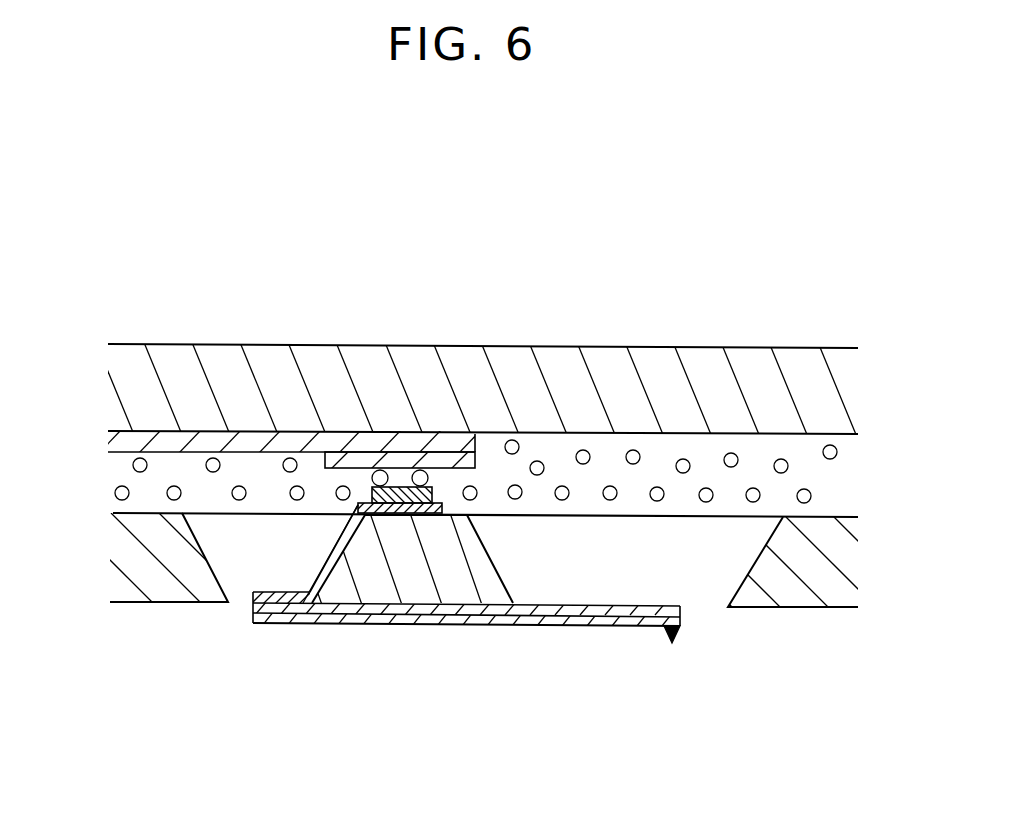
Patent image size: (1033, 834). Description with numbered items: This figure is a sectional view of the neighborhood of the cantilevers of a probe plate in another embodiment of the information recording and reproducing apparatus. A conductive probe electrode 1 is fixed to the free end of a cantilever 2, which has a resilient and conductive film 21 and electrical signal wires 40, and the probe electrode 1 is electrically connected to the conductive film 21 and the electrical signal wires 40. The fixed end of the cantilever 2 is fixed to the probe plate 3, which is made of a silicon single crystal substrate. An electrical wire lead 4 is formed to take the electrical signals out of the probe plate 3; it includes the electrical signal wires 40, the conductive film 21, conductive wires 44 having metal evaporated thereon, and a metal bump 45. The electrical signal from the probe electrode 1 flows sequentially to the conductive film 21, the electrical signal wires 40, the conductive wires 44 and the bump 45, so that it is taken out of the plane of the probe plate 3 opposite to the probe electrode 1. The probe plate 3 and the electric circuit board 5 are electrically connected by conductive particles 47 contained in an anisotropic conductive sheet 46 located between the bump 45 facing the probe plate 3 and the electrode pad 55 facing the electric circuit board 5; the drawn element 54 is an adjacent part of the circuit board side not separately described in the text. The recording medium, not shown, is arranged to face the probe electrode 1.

The conductive probe electrode 1 is at (677, 640).
The cantilever 2 is at (448, 659).
The probe plate 3 is at (495, 590).
The electrical wire lead 4 is at (247, 610).
The electric circuit board 5 is at (652, 363).
The conductive film 21 is at (484, 610).
The electrical signal wires 40 is at (457, 627).
The conductive wires 44 is at (251, 598).
The metal bump 45 is at (386, 497).
The anisotropic conductive sheet 46 is at (112, 467).
The conductive particles 47 is at (143, 461).
The electrode 54 is at (436, 440).
The electrode pad 55 is at (363, 455).